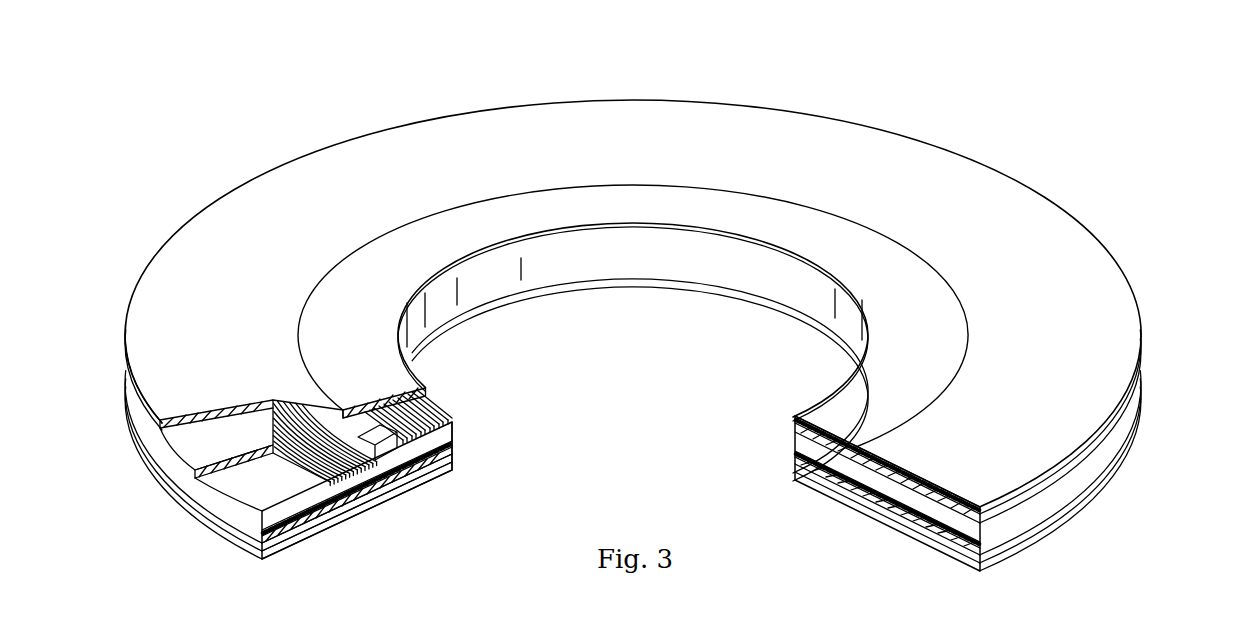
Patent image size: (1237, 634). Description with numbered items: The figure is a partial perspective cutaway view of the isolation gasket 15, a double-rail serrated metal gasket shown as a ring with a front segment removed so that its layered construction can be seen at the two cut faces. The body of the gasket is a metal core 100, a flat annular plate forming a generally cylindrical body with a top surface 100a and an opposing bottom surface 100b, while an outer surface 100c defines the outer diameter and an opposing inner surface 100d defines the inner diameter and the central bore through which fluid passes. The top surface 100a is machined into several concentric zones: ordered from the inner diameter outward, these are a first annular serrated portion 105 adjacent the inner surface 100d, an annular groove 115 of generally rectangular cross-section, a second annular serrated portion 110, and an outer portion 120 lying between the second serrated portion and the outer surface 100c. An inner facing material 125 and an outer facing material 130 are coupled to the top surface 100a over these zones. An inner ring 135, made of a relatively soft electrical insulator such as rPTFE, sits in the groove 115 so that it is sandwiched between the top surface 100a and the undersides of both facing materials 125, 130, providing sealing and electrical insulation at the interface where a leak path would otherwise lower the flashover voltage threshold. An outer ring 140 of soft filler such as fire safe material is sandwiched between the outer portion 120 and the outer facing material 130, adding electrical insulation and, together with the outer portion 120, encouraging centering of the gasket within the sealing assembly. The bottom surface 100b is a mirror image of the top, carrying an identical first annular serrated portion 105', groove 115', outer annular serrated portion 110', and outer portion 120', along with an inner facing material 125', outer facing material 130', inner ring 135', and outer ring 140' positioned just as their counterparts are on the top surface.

The gasket 15 is at (260, 147).
The metal core 100 is at (453, 452).
The top surface 100a is at (225, 477).
The bottom surface 100b is at (973, 561).
The outer surface 100c is at (223, 513).
The inner surface 100d is at (453, 432).
The first annular serrated portion 105 is at (422, 402).
The first annular serrated portion 105' is at (881, 477).
The second annular serrated portion 110 is at (269, 413).
The outer annular serrated portion 110' is at (887, 518).
The annular groove 115 is at (383, 413).
The groove 115' is at (886, 490).
The outer portion 120 is at (336, 523).
The outer portion 120' is at (886, 534).
The inner facing material 125 is at (665, 322).
The inner facing material 125' is at (375, 488).
The outer facing material 130 is at (1061, 423).
The outer facing material 130' is at (357, 514).
The inner ring 135 is at (268, 415).
The inner ring 135' is at (860, 457).
The outer ring 140 is at (216, 424).
The outer ring 140' is at (929, 499).